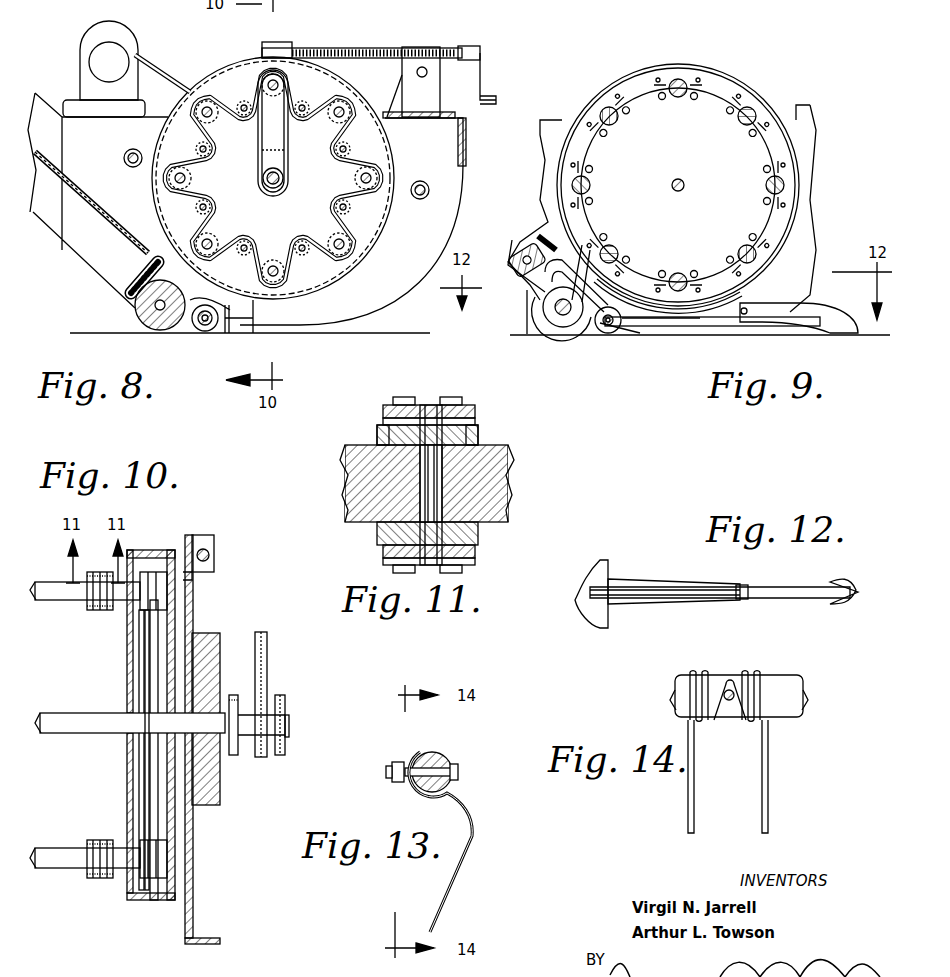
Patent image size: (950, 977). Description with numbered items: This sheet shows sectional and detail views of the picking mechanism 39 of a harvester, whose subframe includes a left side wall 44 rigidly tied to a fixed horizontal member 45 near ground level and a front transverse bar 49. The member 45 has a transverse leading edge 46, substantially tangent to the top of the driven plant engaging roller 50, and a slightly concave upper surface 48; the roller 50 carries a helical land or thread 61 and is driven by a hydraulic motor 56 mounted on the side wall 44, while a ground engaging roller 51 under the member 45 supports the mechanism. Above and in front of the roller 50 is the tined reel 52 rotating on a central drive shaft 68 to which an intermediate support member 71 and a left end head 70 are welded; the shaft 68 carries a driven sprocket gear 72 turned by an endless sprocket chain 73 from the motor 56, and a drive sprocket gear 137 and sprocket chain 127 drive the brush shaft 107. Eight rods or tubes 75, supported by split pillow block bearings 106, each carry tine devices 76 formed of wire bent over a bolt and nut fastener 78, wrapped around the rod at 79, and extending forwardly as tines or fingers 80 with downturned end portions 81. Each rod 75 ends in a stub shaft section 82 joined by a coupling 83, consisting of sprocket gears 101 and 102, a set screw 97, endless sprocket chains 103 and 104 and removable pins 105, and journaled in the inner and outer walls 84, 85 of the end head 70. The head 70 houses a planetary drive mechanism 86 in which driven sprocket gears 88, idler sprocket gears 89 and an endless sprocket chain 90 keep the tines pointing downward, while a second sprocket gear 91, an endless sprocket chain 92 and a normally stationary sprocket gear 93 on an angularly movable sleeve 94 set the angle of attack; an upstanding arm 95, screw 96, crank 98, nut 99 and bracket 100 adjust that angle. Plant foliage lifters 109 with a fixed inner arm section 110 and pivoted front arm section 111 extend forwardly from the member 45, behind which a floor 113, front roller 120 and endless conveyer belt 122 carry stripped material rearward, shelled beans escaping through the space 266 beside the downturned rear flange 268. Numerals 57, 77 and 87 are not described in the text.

In FIG. 8, the picking mechanism 39 is at (218, 62).
In FIG. 9, the picking mechanism 39 is at (794, 85).
In FIG. 8, the left side wall 44 is at (350, 300).
In FIG. 9, the left side wall 44 is at (814, 243).
In FIG. 10, the left side wall 44 is at (196, 912).
In FIG. 8, the fixed horizontal member 45 is at (128, 285).
In FIG. 9, the fixed horizontal member 45 is at (540, 298).
In FIG. 12, the fixed horizontal member 45 is at (592, 574).
In FIG. 8, the leading edge 46 is at (228, 333).
In FIG. 9, the leading edge 46 is at (630, 328).
In FIG. 12, the leading edge 46 is at (612, 568).
In FIG. 8, the upper surface 48 is at (254, 332).
In FIG. 9, the upper surface 48 is at (584, 246).
In FIG. 12, the upper surface 48 is at (596, 574).
In FIG. 8, the front transverse bar 49 is at (468, 136).
In FIG. 8, the driven roller 50 is at (205, 332).
In FIG. 9, the driven roller 50 is at (602, 334).
In FIG. 8, the ground engaging roller 51 is at (150, 330).
In FIG. 9, the ground engaging roller 51 is at (562, 328).
In FIG. 8, the tined reel 52 is at (258, 58).
In FIG. 9, the tined reel 52 is at (603, 78).
In FIG. 8, the hydraulic motor 56 is at (105, 48).
In FIG. 8, the bolt 57 is at (430, 192).
In FIG. 8, the helical land or thread 61 is at (198, 330).
In FIG. 9, the helical land or thread 61 is at (610, 334).
In FIG. 8, the drive shaft 68 is at (273, 190).
In FIG. 9, the drive shaft 68 is at (678, 192).
In FIG. 10, the drive shaft 68 is at (58, 713).
In FIG. 8, the left end head 70 is at (385, 246).
In FIG. 9, the left end head 70 is at (812, 200).
In FIG. 10, the left end head 70 is at (168, 534).
In FIG. 9, the intermediate support member 71 is at (760, 148).
In FIG. 10, the driven sprocket gear 72 is at (262, 757).
In FIG. 8, the endless sprocket chain 73 is at (163, 58).
In FIG. 10, the endless sprocket chain 73 is at (268, 654).
In FIG. 9, the rods or tubes 75 is at (620, 122).
In FIG. 10, the rods or tubes 75 is at (50, 582).
In FIG. 11, the rods or tubes 75 is at (345, 474).
In FIG. 13, the rods or tubes 75 is at (436, 752).
In FIG. 14, the rods or tubes 75 is at (800, 680).
In FIG. 13, the tine devices 76 is at (404, 748).
In FIG. 14, the tine devices 76 is at (786, 737).
In FIG. 10, the collar 77 is at (234, 756).
In FIG. 13, the bolt and nut fastener 78 is at (460, 768).
In FIG. 14, the bolt and nut fastener 78 is at (730, 680).
In FIG. 13, the wire wraps 79 is at (450, 756).
In FIG. 14, the wire wraps 79 is at (700, 670).
In FIG. 13, the tines or fingers 80 is at (466, 808).
In FIG. 14, the tines or fingers 80 is at (762, 746).
In FIG. 13, the downturned end portion 81 is at (446, 910).
In FIG. 14, the downturned end portion 81 is at (690, 833).
In FIG. 8, the stub shaft section 82 is at (366, 168).
In FIG. 10, the stub shaft section 82 is at (168, 596).
In FIG. 11, the stub shaft section 82 is at (508, 478).
In FIG. 10, the coupling 83 is at (94, 620).
In FIG. 11, the coupling 83 is at (438, 396).
In FIG. 10, the inner wall 84 is at (128, 778).
In FIG. 8, the outer wall 85 is at (345, 80).
In FIG. 10, the outer wall 85 is at (178, 828).
In FIG. 8, the planetary drive mechanism 86 is at (166, 209).
In FIG. 10, the planetary drive mechanism 86 is at (149, 566).
In FIG. 10, the flange 87 is at (234, 694).
In FIG. 8, the driven sprocket gear 88 is at (332, 120).
In FIG. 10, the driven sprocket gear 88 is at (140, 627).
In FIG. 8, the idler sprocket gear 89 is at (246, 102).
In FIG. 8, the endless sprocket chain 90 is at (256, 268).
In FIG. 10, the endless sprocket chain 90 is at (140, 758).
In FIG. 10, the second sprocket gear 91 is at (160, 624).
In FIG. 8, the endless sprocket chain 92 is at (258, 142).
In FIG. 10, the endless sprocket chain 92 is at (210, 648).
In FIG. 8, the normally stationary sprocket gear 93 is at (262, 166).
In FIG. 10, the normally stationary sprocket gear 93 is at (160, 756).
In FIG. 8, the angularly movable sleeve 94 is at (286, 178).
In FIG. 10, the angularly movable sleeve 94 is at (205, 670).
In FIG. 8, the upstanding arm 95 is at (282, 40).
In FIG. 10, the upstanding arm 95 is at (195, 578).
In FIG. 8, the screw 96 is at (360, 48).
In FIG. 10, the screw 96 is at (214, 552).
In FIG. 11, the set screw 97 is at (377, 440).
In FIG. 8, the crank 98 is at (486, 68).
In FIG. 8, the nut 99 is at (405, 46).
In FIG. 8, the bracket 100 is at (420, 88).
In FIG. 11, the sprocket gear 101 is at (377, 430).
In FIG. 11, the sprocket gear 102 is at (478, 536).
In FIG. 11, the endless sprocket chain 103 is at (396, 398).
In FIG. 11, the endless sprocket chain 104 is at (470, 406).
In FIG. 11, the removable pins 105 is at (476, 410).
In FIG. 9, the split pillow block bearings 106 is at (680, 78).
In FIG. 8, the brush shaft 107 is at (124, 156).
In FIG. 9, the plant foliage lifters 109 is at (822, 304).
In FIG. 12, the plant foliage lifters 109 is at (748, 584).
In FIG. 9, the fixed inner arm section 110 is at (680, 328).
In FIG. 12, the fixed inner arm section 110 is at (664, 590).
In FIG. 9, the pivoted front arm section 111 is at (800, 330).
In FIG. 12, the pivoted front arm section 111 is at (806, 586).
In FIG. 8, the floor 113 is at (112, 185).
In FIG. 9, the floor 113 is at (540, 218).
In FIG. 9, the front roller 120 is at (514, 252).
In FIG. 9, the endless conveyer belt 122 is at (530, 236).
In FIG. 10, the sprocket chain 127 is at (285, 696).
In FIG. 10, the drive sprocket gear 137 is at (286, 752).
In FIG. 9, the space 266 is at (520, 290).
In FIG. 9, the downturned rear flange 268 is at (527, 334).